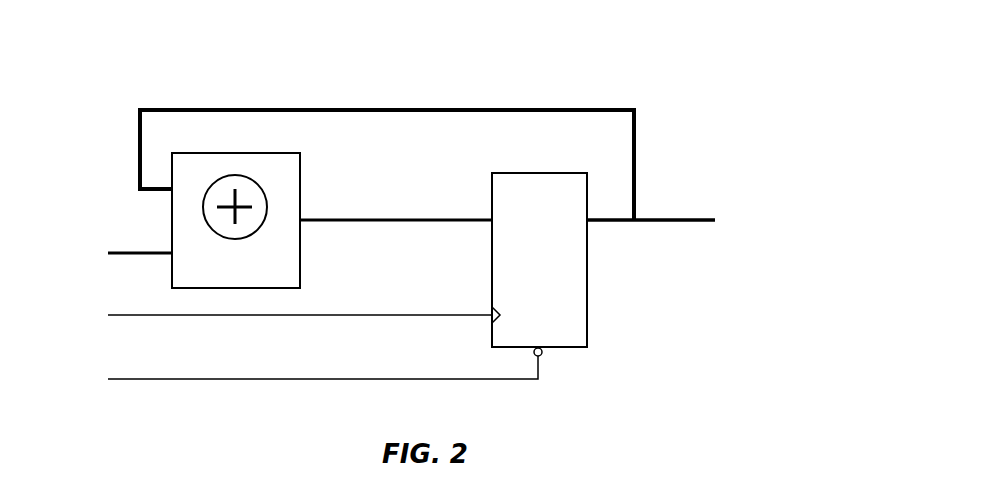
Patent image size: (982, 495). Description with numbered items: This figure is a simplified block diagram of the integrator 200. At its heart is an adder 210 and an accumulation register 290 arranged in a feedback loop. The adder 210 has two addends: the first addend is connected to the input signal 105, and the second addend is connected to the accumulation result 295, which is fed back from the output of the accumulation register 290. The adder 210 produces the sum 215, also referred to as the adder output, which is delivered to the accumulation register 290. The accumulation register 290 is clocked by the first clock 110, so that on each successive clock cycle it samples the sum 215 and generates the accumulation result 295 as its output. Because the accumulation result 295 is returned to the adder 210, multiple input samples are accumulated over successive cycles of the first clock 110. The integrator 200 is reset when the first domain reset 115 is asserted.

The integrator 200 is at (265, 71).
The adder 210 is at (218, 274).
The accumulation register 290 is at (523, 279).
The input signal 105 is at (156, 255).
The first clock 110 is at (205, 318).
The first domain reset 115 is at (205, 381).
The sum 215 is at (396, 224).
The accumulation result 295 is at (667, 224).